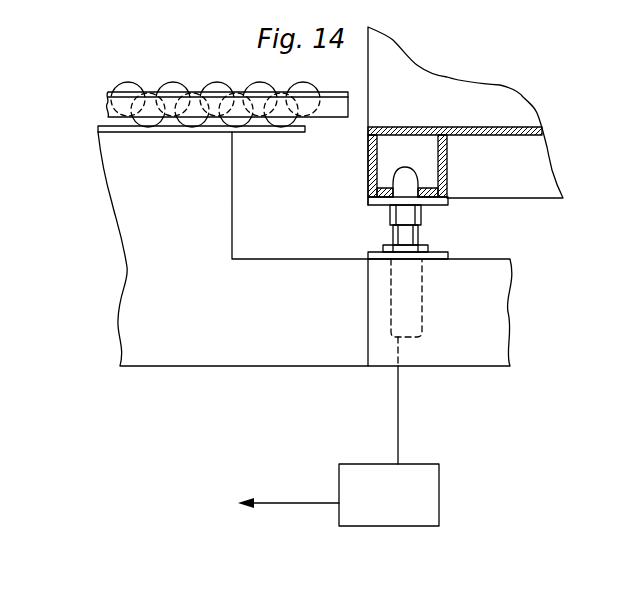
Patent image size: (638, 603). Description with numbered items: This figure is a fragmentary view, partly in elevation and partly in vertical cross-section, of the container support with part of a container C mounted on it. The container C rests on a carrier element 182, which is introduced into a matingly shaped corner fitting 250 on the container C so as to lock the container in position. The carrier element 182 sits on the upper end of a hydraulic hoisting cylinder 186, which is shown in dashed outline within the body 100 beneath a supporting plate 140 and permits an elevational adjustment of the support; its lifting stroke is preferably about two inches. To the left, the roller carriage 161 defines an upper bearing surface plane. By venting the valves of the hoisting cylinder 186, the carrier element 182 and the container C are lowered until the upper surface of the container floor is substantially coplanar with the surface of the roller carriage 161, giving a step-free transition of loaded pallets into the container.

The base body 100 is at (133, 237).
The support plate 140 is at (265, 132).
The roller carriage 161 is at (158, 72).
The carrier element 182 is at (390, 220).
The hoisting cylinder 186 is at (413, 305).
The corner fitting 250 is at (428, 198).
The container C is at (495, 95).